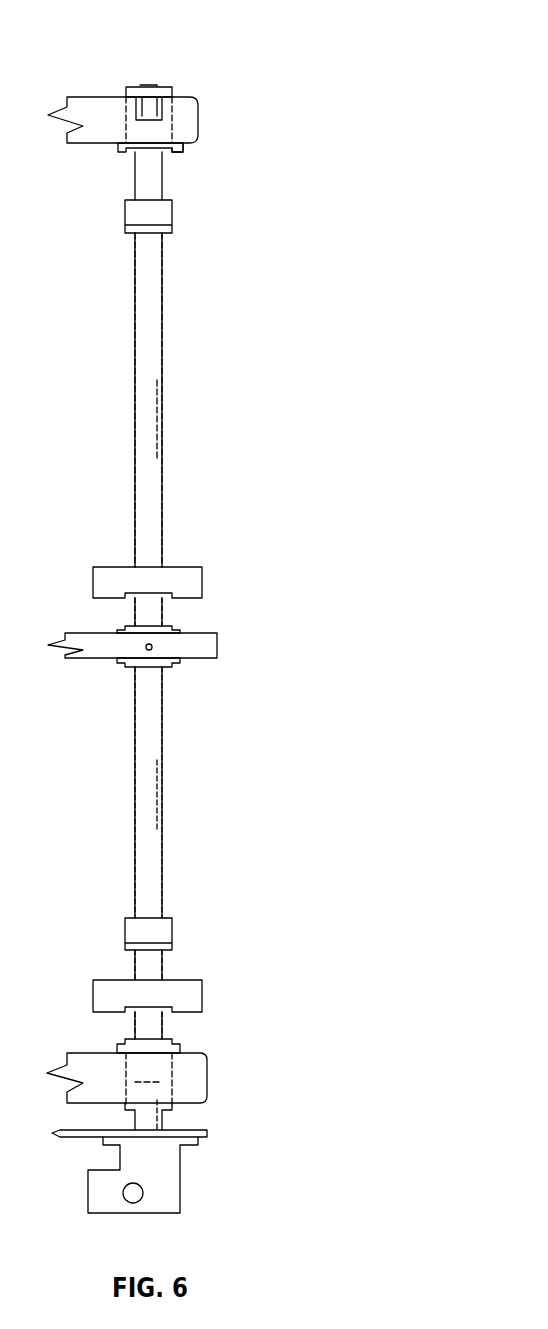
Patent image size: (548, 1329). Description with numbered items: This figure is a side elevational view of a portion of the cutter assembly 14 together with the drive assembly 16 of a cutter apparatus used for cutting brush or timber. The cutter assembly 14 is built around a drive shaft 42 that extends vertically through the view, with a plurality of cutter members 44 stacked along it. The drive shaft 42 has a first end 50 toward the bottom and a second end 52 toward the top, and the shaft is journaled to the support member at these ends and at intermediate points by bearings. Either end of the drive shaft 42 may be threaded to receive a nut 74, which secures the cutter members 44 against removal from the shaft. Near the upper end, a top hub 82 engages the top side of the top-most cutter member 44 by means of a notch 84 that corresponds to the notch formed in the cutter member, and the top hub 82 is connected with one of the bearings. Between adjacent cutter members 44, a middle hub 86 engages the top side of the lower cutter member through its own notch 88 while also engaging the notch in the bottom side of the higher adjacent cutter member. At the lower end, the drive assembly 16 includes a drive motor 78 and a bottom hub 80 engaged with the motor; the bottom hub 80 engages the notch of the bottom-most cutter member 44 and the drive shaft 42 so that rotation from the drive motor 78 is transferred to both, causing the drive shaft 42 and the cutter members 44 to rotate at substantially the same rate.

The cutter assembly 14 is at (215, 31).
The drive assembly 16 is at (171, 1218).
The drive shaft 42 is at (148, 414).
The cutter members 44 is at (172, 213).
The first end of the drive shaft 50 is at (162, 780).
The second end of the drive shaft 52 is at (162, 292).
The nut 74 is at (160, 87).
The drive motor 78 is at (180, 1195).
The bottom hub 80 is at (180, 1050).
The top hub 82 is at (183, 148).
The notch 84 is at (139, 150).
The middle hub 86 is at (129, 626).
The notch 88 is at (122, 667).